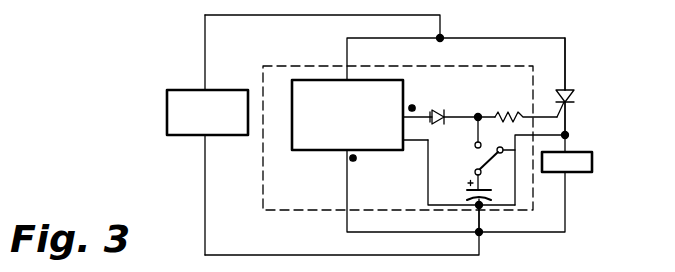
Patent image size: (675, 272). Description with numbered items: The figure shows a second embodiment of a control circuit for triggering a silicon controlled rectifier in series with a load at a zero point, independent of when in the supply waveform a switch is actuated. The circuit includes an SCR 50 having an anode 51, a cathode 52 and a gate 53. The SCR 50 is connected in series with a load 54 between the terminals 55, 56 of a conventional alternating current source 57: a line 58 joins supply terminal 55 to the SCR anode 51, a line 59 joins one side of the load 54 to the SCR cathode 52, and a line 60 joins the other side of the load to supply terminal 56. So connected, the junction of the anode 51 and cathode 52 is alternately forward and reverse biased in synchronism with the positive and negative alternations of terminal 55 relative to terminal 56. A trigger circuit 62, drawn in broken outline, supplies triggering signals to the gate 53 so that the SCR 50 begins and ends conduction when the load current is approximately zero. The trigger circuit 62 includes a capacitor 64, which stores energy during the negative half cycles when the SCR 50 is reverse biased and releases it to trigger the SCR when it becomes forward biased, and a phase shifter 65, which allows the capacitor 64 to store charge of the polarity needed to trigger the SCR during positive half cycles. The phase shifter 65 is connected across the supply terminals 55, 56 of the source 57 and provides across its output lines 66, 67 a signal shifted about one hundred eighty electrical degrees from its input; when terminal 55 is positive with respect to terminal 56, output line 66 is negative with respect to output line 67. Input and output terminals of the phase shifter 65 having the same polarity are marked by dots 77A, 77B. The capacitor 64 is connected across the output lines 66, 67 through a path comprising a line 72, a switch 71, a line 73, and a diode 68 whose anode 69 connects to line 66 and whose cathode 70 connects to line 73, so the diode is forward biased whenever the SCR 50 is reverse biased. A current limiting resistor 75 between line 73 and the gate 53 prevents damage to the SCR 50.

The SCR 50 is at (582, 95).
The anode 51 is at (571, 93).
The cathode 52 is at (569, 104).
The gate 53 is at (560, 115).
The load 54 is at (593, 168).
The terminal 55 is at (208, 88).
The terminal 56 is at (199, 138).
The alternating current source 57 is at (167, 133).
The line 58 is at (313, 17).
The line 59 is at (576, 141).
The line 60 is at (268, 255).
The trigger circuit 62 is at (500, 66).
The capacitor 64 is at (463, 192).
The phase shifter 65 is at (303, 151).
The output line 66 is at (429, 107).
The output line 67 is at (430, 152).
The diode 68 is at (465, 96).
The anode 69 is at (433, 122).
The cathode 70 is at (447, 107).
The switch 71 is at (495, 158).
The line 72 is at (490, 190).
The line 73 is at (475, 136).
The current limiting resistor 75 is at (500, 109).
The dot 77A is at (412, 108).
The dot 77B is at (353, 158).